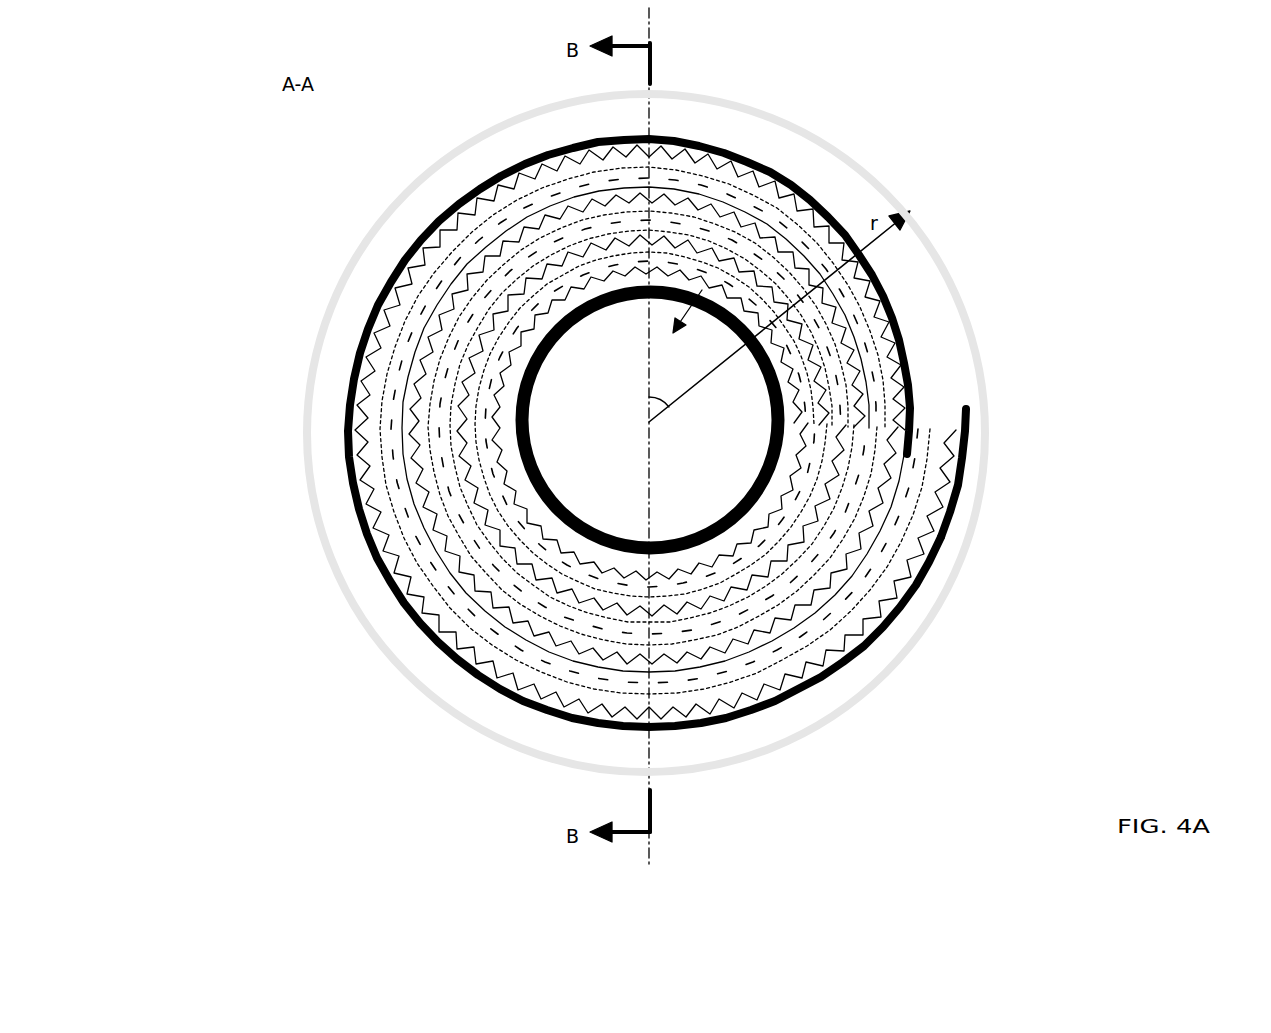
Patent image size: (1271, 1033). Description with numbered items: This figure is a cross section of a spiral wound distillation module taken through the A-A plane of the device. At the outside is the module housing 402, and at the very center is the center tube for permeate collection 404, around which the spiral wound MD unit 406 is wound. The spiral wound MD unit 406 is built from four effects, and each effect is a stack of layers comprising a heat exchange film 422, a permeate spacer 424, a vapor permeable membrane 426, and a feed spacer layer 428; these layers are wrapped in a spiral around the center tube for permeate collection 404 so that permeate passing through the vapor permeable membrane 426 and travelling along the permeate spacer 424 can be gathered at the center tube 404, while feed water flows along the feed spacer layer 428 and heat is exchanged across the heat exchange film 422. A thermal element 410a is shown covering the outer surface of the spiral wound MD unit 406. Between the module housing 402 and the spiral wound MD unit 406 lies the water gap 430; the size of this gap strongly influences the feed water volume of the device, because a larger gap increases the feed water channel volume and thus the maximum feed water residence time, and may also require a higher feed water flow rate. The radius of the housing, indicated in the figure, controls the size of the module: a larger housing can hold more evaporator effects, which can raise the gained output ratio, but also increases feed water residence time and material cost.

The module housing 402 is at (665, 433).
The center tube for permeate collection 404 is at (841, 433).
The spiral wound MD unit 406 is at (653, 350).
The thermal element 410a is at (1033, 437).
The heat exchange film 422 is at (564, 429).
The permeate spacer 424 is at (655, 498).
The vapor permeable membrane 426 is at (569, 430).
The feed spacer layer 428 is at (546, 430).
The water gap 430 is at (644, 421).